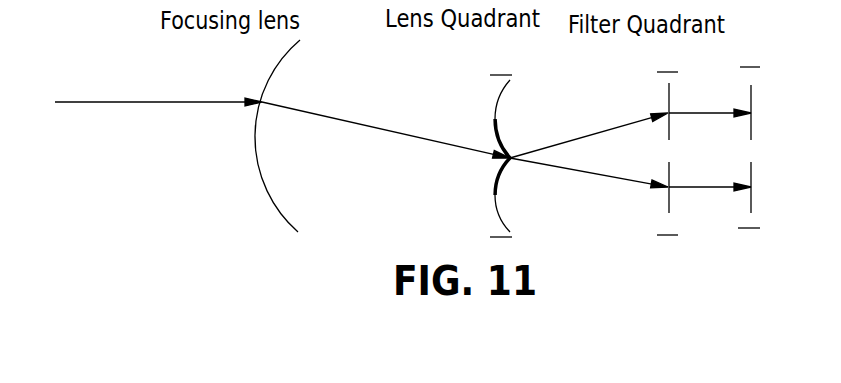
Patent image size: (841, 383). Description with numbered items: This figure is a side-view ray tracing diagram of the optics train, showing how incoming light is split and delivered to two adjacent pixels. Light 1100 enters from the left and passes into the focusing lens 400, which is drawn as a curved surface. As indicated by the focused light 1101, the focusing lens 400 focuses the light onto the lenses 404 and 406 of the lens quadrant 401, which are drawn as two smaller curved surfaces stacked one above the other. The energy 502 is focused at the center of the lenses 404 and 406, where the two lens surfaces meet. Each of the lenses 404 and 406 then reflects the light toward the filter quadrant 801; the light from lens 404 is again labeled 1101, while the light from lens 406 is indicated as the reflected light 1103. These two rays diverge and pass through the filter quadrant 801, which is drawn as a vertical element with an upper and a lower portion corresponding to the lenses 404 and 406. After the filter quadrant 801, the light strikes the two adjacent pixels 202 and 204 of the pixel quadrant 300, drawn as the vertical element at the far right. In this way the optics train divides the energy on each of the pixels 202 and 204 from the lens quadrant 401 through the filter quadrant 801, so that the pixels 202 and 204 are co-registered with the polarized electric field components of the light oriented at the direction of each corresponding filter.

The light 1100 is at (158, 101).
The focusing lens 400 is at (274, 70).
The focused light 1101 is at (391, 130).
The light reflected by lens 406 1103 is at (637, 181).
The lens quadrant 401 is at (507, 74).
The lens 404 is at (497, 100).
The energy 502 is at (495, 182).
The lens 406 is at (497, 214).
The filter quadrant 801 is at (667, 72).
The pixel 202 is at (750, 93).
The pixel 204 is at (751, 212).
The pixel quadrant 300 is at (751, 67).